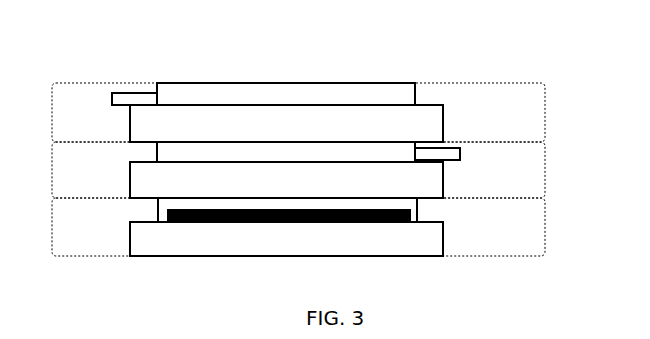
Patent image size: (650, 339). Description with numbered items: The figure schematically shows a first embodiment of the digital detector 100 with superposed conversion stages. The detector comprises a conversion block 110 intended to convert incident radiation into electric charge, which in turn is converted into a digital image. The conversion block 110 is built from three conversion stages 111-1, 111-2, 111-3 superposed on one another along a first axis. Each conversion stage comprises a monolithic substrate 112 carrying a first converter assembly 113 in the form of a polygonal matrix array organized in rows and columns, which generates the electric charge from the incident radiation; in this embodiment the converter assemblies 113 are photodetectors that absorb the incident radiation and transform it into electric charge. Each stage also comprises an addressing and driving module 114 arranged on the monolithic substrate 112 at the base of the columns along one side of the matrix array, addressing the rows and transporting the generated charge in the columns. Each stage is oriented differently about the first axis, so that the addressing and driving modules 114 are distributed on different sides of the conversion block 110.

The digital detector 100 is at (258, 5).
The conversion block 110 is at (197, 74).
The conversion stage 111-1 is at (549, 142).
The conversion stage 111-2 is at (549, 198).
The conversion stage 111-3 is at (549, 198).
The monolithic substrate 112 is at (443, 125).
The first converter assembly 113 is at (415, 87).
The addressing and driving module 114 is at (112, 97).